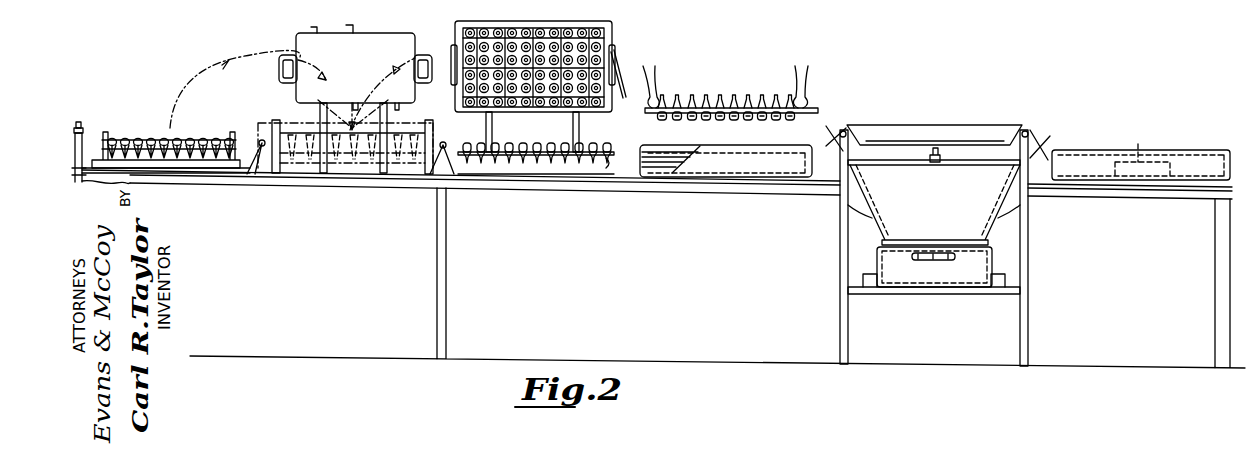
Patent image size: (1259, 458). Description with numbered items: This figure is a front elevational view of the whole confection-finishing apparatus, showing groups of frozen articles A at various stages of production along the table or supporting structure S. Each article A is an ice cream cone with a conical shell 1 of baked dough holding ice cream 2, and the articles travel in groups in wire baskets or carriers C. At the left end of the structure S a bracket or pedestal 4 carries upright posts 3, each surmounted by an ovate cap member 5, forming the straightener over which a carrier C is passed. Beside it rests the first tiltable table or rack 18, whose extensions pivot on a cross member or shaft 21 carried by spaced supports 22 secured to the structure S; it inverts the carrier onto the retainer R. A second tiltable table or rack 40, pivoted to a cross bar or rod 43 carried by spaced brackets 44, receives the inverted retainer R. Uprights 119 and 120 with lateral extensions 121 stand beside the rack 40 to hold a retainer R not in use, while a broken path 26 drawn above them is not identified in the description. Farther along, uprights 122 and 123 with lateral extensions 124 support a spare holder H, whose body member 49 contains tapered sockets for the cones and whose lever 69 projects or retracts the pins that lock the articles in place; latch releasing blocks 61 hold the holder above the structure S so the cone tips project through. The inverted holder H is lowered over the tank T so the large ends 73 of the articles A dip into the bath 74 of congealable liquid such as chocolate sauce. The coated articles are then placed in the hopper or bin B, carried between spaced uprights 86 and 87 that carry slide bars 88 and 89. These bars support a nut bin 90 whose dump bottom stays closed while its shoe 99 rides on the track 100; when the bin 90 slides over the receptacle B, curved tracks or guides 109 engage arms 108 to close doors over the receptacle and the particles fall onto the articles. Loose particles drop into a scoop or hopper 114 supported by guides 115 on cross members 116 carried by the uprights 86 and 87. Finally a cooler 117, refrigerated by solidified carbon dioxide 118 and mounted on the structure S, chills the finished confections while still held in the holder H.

The conical shell 1 is at (194, 167).
The ice cream 2 is at (137, 143).
The upright posts 3 is at (78, 122).
The bracket or pedestal 4 is at (78, 182).
The cap member 5 is at (83, 129).
The first tiltable table or rack 18 is at (223, 173).
The cross member or shaft 21 is at (247, 163).
The spaced supports 22 is at (247, 170).
The transfer path 26 is at (303, 38).
The second tiltable table or rack 40 is at (312, 173).
The cross bar or rod 43 is at (452, 165).
The spaced brackets 44 is at (438, 165).
The body member 49 is at (510, 27).
The latch releasing blocks 61 is at (620, 152).
The lever 69 is at (622, 97).
The large ends 73 is at (782, 124).
The bath or mixture of congealable liquid 74 is at (672, 166).
The upright 86 is at (840, 296).
The upright 87 is at (1028, 302).
The slide bar 88 is at (845, 130).
The slide bar 89 is at (1027, 130).
The bin 90 is at (938, 126).
The shoe 99 is at (928, 155).
The track 100 is at (942, 154).
The arms or extensions 108 is at (828, 160).
The curved track or guide 109 is at (808, 166).
The scoop or hopper 114 is at (955, 278).
The guides 115 is at (863, 283).
The cross members 116 is at (895, 294).
The cooler 117 is at (1230, 150).
The solidified carbon dioxide 118 is at (1141, 152).
The upright 119 is at (392, 115).
The upright 120 is at (318, 101).
The lateral extensions 121 is at (392, 118).
The upright 122 is at (538, 135).
The upright 123 is at (577, 152).
The lateral extensions 124 is at (486, 128).
The frozen confections or articles A is at (197, 148).
The hopper or bin B is at (934, 205).
The baskets or carriers C is at (107, 134).
The holder H is at (617, 50).
The retainer R is at (372, 42).
The table or supporting structure S is at (620, 195).
The container or tank T is at (768, 177).